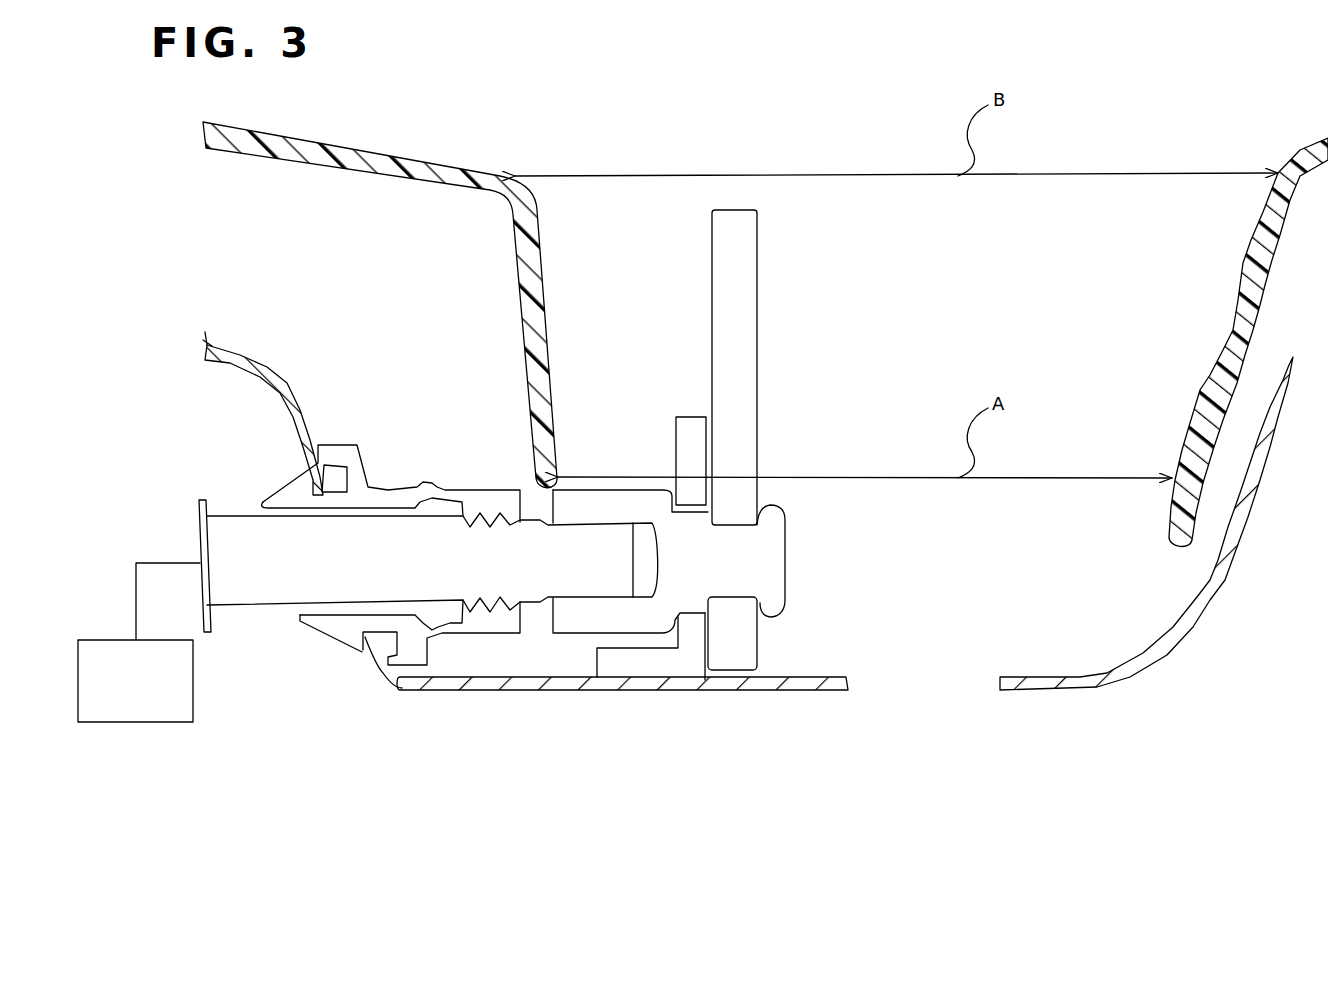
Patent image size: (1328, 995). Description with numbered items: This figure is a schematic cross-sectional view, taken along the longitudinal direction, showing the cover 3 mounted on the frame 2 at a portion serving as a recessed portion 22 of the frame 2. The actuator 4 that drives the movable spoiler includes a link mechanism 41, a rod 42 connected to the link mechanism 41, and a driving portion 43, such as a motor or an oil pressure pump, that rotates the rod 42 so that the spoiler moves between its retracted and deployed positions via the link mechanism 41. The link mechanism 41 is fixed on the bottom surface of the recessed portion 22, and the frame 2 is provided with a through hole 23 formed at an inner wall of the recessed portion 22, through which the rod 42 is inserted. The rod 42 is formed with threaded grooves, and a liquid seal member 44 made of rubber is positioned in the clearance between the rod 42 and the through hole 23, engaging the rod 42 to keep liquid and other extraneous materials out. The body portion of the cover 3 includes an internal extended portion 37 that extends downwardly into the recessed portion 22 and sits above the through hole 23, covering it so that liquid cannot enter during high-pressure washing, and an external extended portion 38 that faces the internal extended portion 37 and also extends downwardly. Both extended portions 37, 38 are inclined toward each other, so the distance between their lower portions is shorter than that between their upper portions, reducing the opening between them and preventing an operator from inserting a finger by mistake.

The frame 2 is at (845, 579).
The cover 3 is at (765, 305).
The actuator 4 is at (368, 559).
The recessed portion 22 is at (1153, 650).
The through hole 23 is at (382, 678).
The internal extended portion 37 is at (553, 402).
The external extended portion 38 is at (1197, 402).
The link mechanism 41 is at (752, 320).
The rod 42 is at (247, 520).
The driving portion 43 is at (188, 703).
The liquid seal member 44 is at (393, 495).